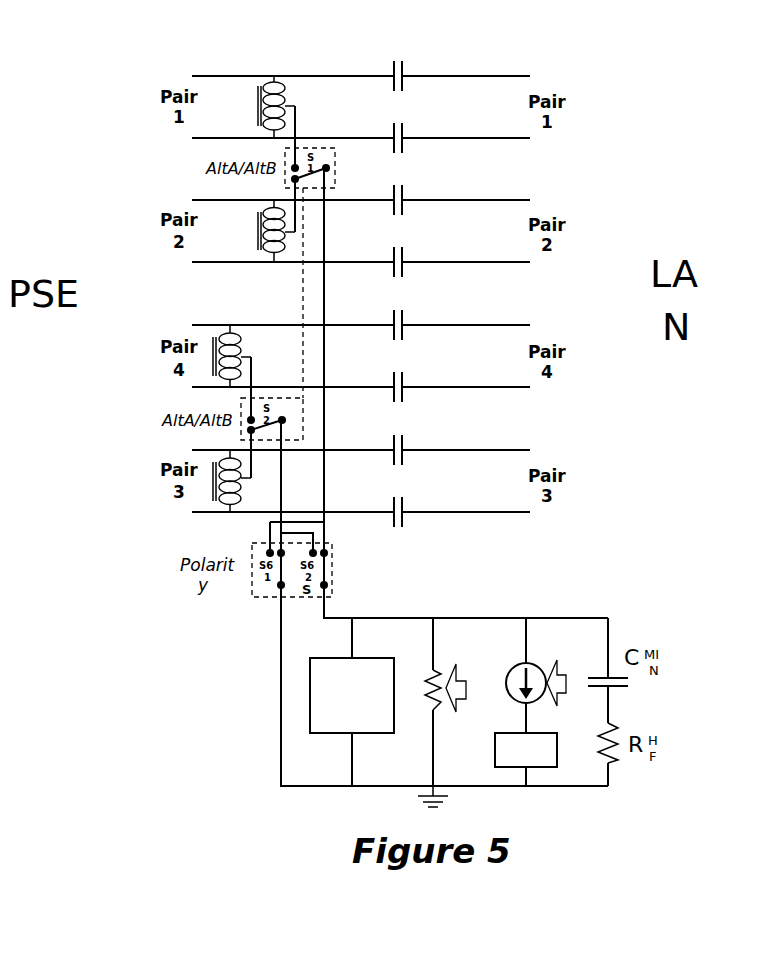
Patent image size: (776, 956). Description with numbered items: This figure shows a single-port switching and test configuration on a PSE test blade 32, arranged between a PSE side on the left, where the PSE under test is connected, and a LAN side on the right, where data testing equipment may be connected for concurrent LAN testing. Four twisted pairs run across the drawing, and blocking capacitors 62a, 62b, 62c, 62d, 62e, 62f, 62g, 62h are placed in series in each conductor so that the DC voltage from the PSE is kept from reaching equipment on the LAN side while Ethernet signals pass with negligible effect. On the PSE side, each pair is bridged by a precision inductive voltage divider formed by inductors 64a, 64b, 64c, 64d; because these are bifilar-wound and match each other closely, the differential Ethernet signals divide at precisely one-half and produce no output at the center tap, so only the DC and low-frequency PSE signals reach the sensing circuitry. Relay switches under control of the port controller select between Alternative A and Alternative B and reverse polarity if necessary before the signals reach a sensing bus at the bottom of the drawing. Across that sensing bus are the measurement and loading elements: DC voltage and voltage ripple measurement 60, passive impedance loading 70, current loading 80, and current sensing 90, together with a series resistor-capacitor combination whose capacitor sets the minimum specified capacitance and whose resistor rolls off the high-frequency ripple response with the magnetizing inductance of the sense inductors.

The PSE test blade 32 is at (88, 98).
The DC voltage and voltage ripple measurement 60 is at (310, 667).
The blocking capacitor 62a is at (402, 64).
The blocking capacitor 62b is at (402, 126).
The blocking capacitor 62c is at (402, 188).
The blocking capacitor 62d is at (402, 250).
The blocking capacitor 62e is at (402, 313).
The blocking capacitor 62f is at (402, 375).
The blocking capacitor 62g is at (402, 438).
The blocking capacitor 62h is at (402, 500).
The inductor 64a is at (260, 112).
The inductor 64b is at (260, 227).
The inductor 64c is at (215, 345).
The inductor 64d is at (215, 470).
The passive impedance loading 70 is at (427, 672).
The current loading 80 is at (513, 665).
The current sensing 90 is at (557, 757).